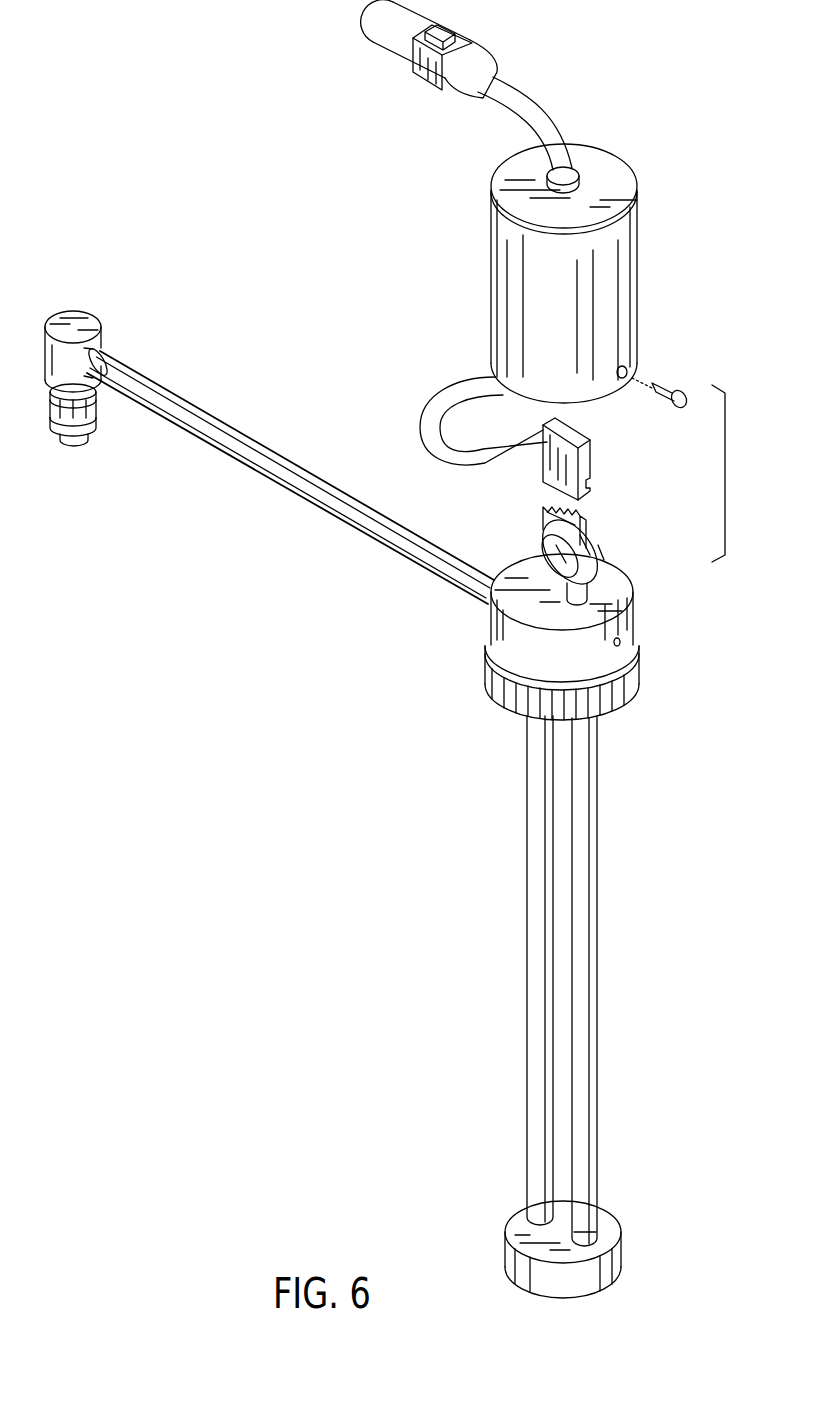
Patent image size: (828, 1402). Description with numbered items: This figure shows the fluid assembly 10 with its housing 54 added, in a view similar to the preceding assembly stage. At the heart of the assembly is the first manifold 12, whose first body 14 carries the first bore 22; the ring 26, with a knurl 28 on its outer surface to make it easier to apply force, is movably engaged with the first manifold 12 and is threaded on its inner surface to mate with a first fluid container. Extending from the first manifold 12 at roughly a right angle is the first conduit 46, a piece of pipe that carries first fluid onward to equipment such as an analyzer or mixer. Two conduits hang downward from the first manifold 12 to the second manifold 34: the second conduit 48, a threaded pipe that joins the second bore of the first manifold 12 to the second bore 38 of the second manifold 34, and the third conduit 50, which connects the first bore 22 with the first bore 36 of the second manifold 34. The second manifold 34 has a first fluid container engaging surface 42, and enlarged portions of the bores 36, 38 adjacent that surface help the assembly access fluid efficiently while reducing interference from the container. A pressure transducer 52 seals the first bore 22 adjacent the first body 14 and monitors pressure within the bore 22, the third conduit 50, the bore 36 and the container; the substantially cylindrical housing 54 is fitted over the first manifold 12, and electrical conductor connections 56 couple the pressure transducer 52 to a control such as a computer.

The fluid assembly 10 is at (378, 830).
The first manifold 12 is at (523, 550).
The first body 14 is at (622, 585).
The first bore 22 is at (600, 597).
The ring 26 is at (492, 700).
The knurl 28 is at (612, 700).
The second manifold 34 is at (540, 1283).
The first bore 36 is at (580, 1248).
The second bore 38 is at (512, 1232).
The first fluid container engaging surface 42 is at (563, 1300).
The first conduit 46 is at (300, 462).
The second conduit 48 is at (527, 968).
The third conduit 50 is at (597, 975).
The pressure transducer 52 is at (585, 540).
The housing 54 is at (640, 270).
The electrical conductor connections 56 is at (512, 118).